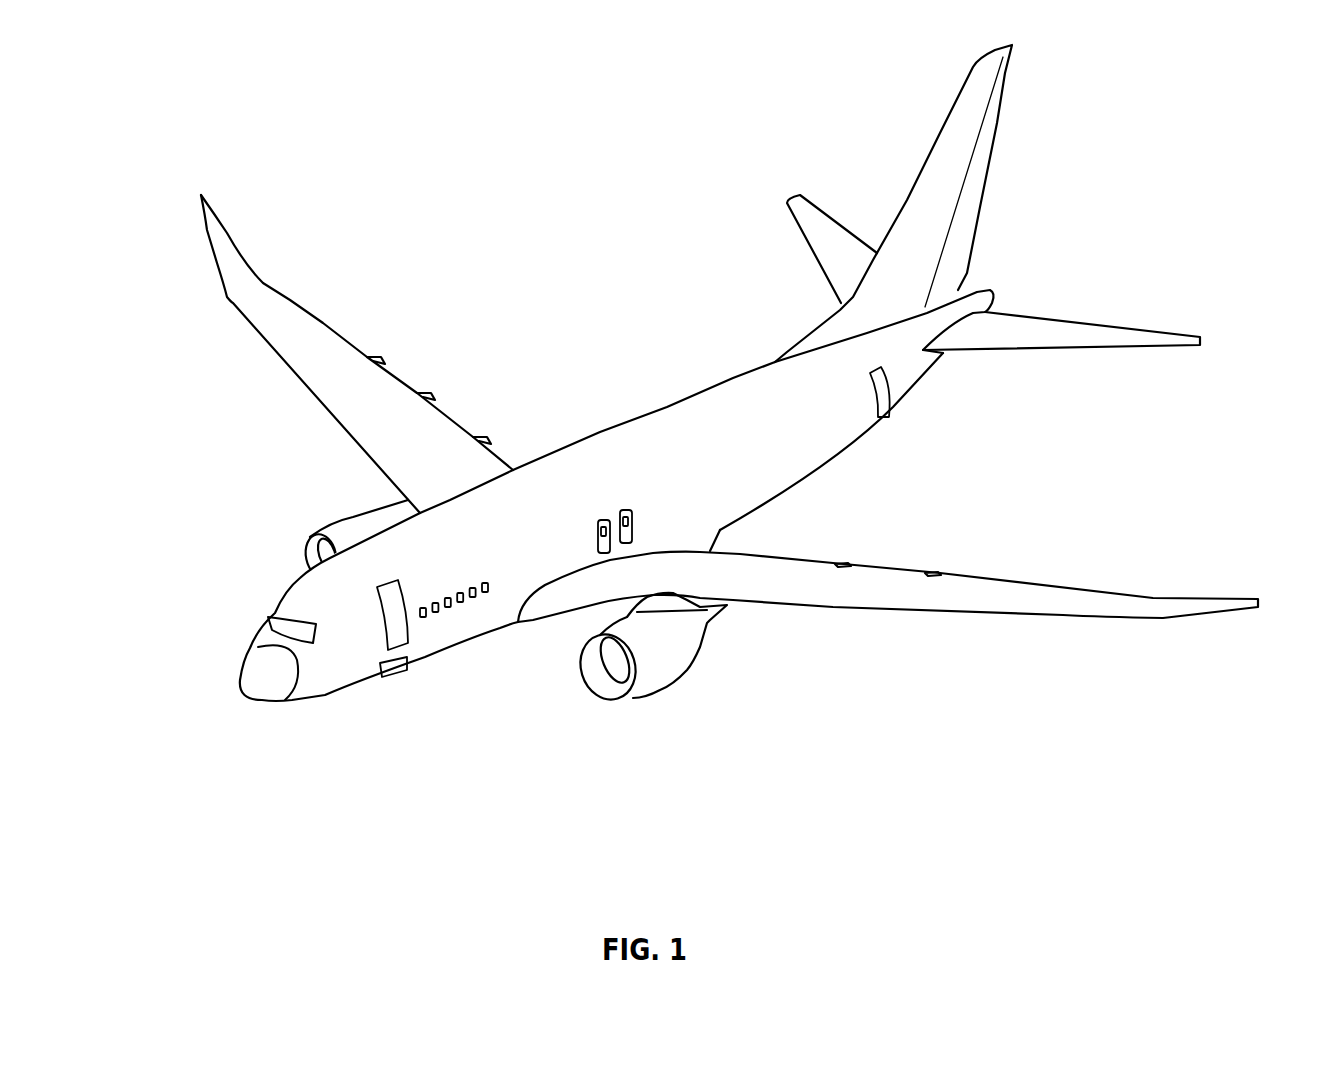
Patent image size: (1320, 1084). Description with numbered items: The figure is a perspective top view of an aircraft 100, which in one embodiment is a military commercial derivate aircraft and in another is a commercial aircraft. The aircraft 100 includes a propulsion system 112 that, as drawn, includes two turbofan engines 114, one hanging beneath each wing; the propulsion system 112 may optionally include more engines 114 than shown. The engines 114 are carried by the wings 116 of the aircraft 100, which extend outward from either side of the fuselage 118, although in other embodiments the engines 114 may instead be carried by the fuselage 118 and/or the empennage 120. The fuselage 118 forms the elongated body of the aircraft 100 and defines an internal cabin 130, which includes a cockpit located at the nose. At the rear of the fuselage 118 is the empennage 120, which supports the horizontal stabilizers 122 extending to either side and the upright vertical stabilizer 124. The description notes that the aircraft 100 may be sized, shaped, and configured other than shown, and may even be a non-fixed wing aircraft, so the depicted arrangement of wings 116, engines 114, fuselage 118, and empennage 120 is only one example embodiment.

The aircraft 100 is at (235, 90).
The propulsion system 112 is at (640, 730).
The turbofan engines 114 is at (318, 535).
The wings 116 is at (325, 325).
The fuselage 118 is at (837, 463).
The empennage 120 is at (960, 287).
The horizontal stabilizers 122 is at (817, 243).
The vertical stabilizer 124 is at (988, 118).
The internal cabin 130 is at (279, 622).